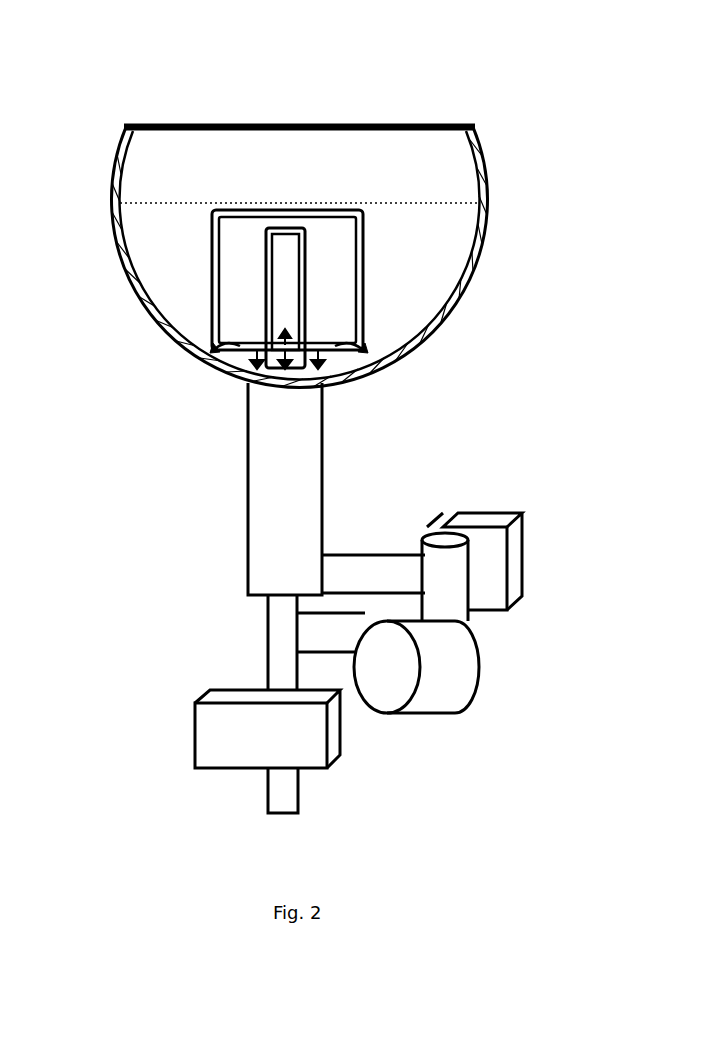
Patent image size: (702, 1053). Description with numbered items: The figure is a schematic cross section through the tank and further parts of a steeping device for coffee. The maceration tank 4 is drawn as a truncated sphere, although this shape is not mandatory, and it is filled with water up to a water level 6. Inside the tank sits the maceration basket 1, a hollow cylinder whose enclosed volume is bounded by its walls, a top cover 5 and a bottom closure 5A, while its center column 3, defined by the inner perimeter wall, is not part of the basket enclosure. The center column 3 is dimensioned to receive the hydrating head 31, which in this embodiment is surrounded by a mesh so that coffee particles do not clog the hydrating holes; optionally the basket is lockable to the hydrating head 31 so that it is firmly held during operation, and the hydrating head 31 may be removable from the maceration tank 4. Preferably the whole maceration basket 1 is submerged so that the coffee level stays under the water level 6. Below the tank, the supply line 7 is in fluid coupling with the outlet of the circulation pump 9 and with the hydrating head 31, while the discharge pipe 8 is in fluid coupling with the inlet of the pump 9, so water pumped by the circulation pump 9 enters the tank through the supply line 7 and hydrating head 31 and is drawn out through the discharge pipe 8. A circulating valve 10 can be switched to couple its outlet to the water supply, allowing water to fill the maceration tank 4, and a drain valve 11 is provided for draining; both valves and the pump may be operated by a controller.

The maceration basket 1 is at (210, 263).
The center column 3 is at (267, 287).
The hydrating head 31 is at (288, 255).
The maceration tank 4 is at (482, 147).
The top cover 5 is at (230, 208).
The bottom closure 5A is at (227, 355).
The water level 6 is at (428, 203).
The supply line 7 is at (268, 633).
The discharge pipe 8 is at (242, 452).
The circulation pump 9 is at (480, 663).
The circulating valve 10 is at (523, 572).
The drain valve 11 is at (343, 745).